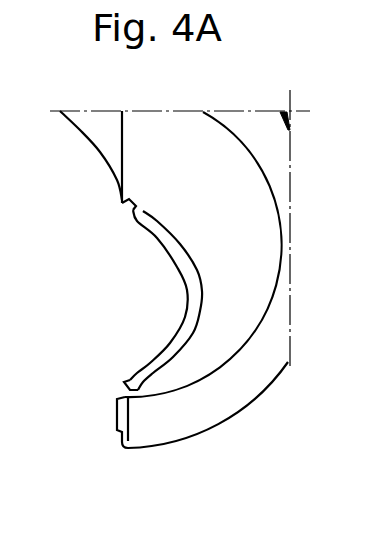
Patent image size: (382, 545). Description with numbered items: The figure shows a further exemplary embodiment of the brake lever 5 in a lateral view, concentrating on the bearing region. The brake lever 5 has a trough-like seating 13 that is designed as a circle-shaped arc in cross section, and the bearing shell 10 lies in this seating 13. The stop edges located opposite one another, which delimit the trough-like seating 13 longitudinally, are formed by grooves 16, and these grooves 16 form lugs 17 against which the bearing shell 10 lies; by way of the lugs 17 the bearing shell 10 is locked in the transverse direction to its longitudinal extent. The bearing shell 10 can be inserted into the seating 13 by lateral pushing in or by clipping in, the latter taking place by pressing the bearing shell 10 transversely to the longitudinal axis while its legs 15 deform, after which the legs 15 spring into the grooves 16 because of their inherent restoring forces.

The brake lever 5 is at (75, 165).
The bearing shell 10 is at (190, 288).
The trough-like seating 13 is at (203, 292).
The legs 15 is at (141, 212).
The grooves 16 is at (127, 203).
The lugs 17 is at (128, 203).